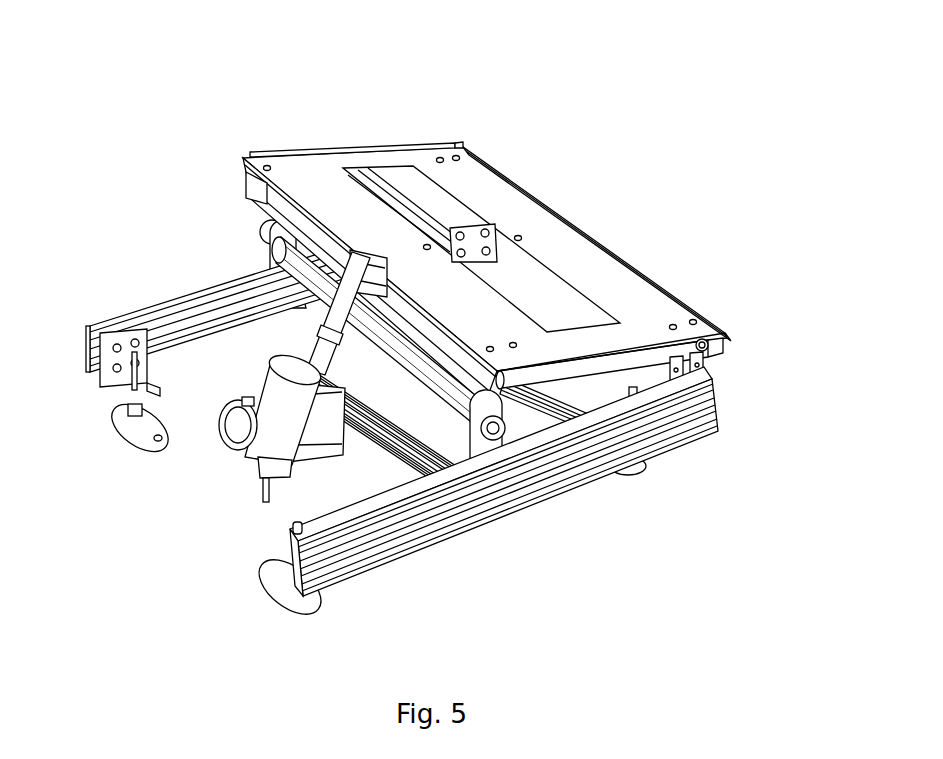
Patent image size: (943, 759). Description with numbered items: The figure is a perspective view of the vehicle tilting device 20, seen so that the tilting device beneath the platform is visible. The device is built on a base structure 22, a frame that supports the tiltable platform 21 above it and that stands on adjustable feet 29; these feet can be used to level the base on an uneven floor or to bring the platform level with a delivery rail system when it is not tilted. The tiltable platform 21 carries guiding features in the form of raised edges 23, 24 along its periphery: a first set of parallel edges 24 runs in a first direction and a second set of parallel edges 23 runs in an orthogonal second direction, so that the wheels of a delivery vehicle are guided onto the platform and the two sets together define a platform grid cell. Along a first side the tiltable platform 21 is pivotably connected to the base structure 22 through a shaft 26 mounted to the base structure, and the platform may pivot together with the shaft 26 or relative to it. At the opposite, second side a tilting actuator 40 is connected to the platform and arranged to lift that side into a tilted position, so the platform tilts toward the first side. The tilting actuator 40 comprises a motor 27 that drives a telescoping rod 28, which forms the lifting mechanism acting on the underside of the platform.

The vehicle tilting device 20 is at (570, 132).
The tiltable platform 21 is at (302, 172).
The base structure 22 is at (585, 472).
The raised edges 23 is at (352, 147).
The raised edges 24 is at (572, 221).
The shaft 26 is at (702, 350).
The motor 27 is at (275, 425).
The telescoping rod 28 is at (262, 362).
The adjustable feet 29 is at (142, 438).
The tilting actuator 40 is at (262, 296).